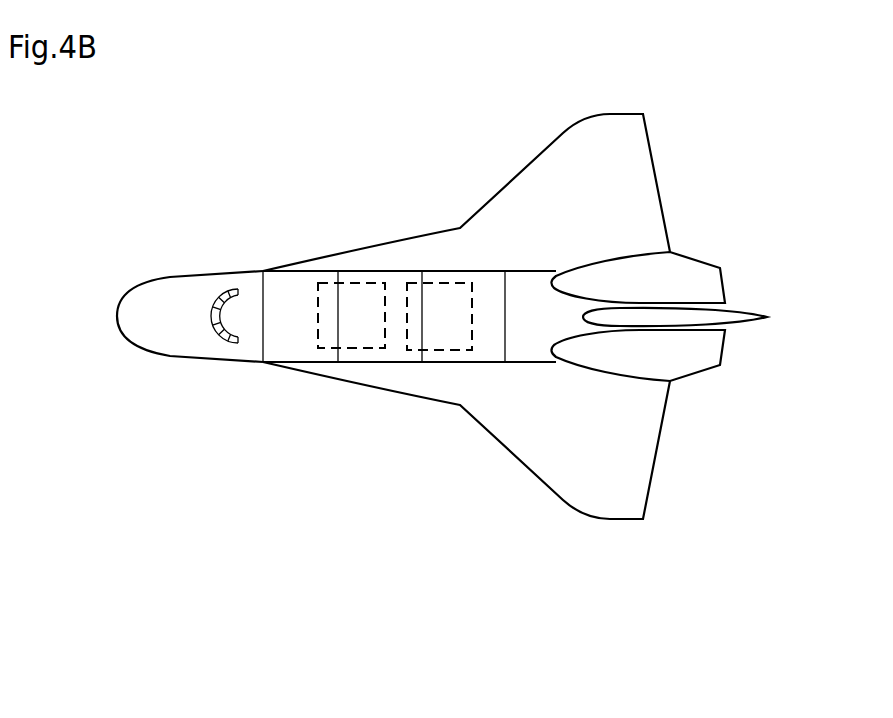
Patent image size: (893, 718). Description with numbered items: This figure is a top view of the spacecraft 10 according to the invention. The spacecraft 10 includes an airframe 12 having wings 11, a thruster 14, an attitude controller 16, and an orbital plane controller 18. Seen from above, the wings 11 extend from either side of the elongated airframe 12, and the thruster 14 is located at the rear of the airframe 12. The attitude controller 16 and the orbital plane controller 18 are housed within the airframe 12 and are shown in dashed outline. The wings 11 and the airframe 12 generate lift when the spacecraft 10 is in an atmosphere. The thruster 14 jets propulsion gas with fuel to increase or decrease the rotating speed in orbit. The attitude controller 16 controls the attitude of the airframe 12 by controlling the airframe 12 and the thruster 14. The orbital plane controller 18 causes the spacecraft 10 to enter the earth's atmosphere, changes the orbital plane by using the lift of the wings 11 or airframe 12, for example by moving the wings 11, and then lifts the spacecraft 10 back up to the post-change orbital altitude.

The spacecraft 10 is at (284, 218).
The wings 11 is at (548, 454).
The airframe 12 is at (326, 386).
The thruster 14 is at (687, 272).
The attitude controller 16 is at (352, 290).
The orbital plane controller 18 is at (443, 290).